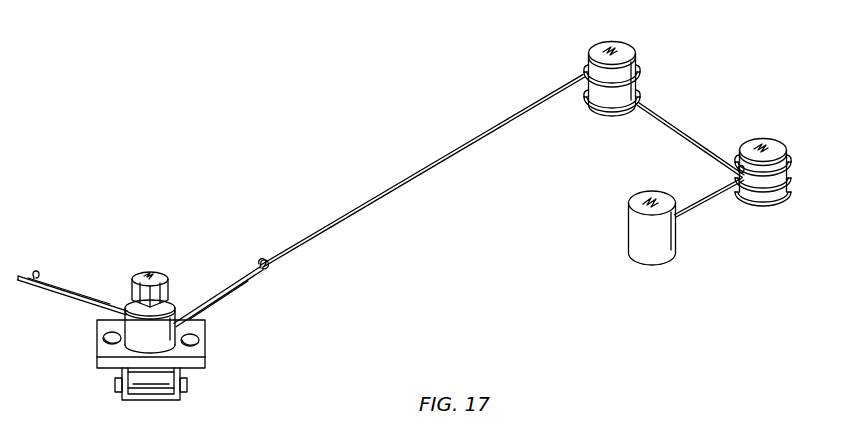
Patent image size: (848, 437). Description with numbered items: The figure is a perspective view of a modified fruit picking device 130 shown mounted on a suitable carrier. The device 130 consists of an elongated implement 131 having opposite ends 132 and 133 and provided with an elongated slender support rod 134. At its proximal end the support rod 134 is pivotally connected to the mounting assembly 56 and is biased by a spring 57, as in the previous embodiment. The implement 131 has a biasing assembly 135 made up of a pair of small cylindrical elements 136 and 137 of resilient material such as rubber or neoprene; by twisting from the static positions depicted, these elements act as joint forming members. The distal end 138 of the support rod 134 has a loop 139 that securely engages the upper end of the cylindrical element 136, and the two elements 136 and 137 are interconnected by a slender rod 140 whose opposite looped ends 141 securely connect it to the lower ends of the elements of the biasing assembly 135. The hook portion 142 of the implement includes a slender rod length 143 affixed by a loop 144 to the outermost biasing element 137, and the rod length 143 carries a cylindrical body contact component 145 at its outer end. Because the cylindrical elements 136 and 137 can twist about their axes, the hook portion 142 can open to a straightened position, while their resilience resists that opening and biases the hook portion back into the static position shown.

The mounting assembly 56 is at (126, 298).
The spring 57 is at (143, 293).
The device 130 is at (316, 233).
The elongated implement 131 is at (350, 218).
The end 132 is at (240, 279).
The end 133 is at (722, 197).
The support rod 134 is at (430, 167).
The biasing assembly 135 is at (684, 150).
The cylindrical element 136 is at (622, 44).
The cylindrical element 137 is at (775, 138).
The distal end 138 is at (546, 97).
The loop 139 is at (645, 68).
The slender rod 140 is at (666, 121).
The looped end 141 is at (607, 120).
The hook portion 142 is at (692, 141).
The slender rod length 143 is at (688, 213).
The loop 144 is at (792, 166).
The cylindrical body contact component 145 is at (627, 236).